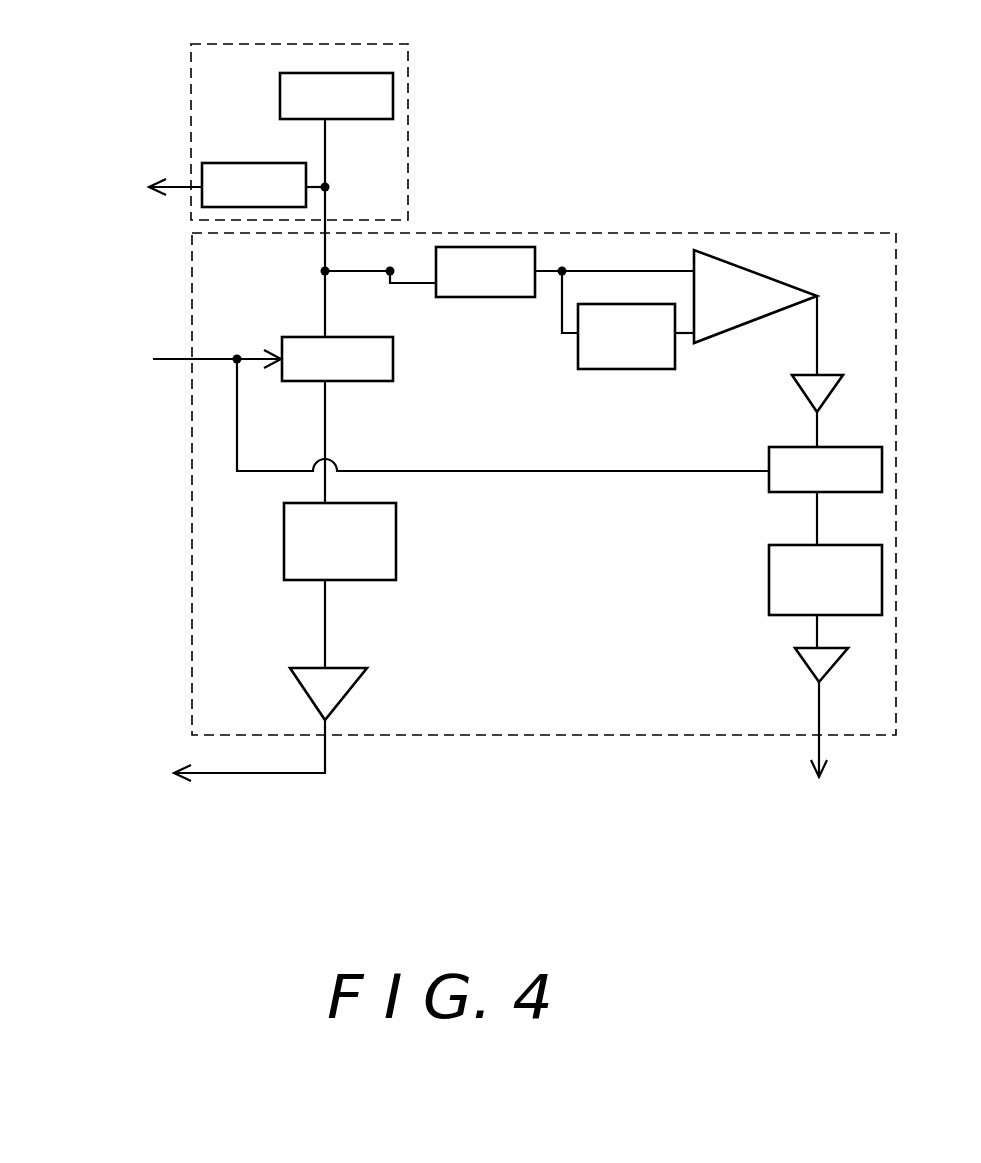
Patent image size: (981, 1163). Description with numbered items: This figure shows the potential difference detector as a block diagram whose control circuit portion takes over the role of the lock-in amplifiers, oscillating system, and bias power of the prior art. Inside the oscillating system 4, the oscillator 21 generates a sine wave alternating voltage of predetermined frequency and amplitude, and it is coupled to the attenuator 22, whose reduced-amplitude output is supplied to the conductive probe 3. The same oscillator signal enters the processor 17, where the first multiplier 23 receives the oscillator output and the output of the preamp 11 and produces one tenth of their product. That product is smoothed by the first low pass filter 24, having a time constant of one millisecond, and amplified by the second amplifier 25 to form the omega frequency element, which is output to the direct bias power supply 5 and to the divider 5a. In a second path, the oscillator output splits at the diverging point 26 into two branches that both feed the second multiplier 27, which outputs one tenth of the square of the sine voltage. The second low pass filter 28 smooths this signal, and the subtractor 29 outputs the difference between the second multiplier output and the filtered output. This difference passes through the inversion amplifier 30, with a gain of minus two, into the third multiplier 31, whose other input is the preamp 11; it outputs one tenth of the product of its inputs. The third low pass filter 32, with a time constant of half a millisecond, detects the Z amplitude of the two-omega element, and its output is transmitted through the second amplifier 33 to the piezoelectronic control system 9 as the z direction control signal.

The conductive probe 3 is at (123, 169).
The oscillating system 4 is at (383, 44).
The direct bias power supply 5 is at (286, 789).
The divider 5a is at (192, 883).
The piezoelectronic control system 9 is at (742, 771).
The preamp 11 is at (158, 354).
The processor 17 is at (705, 232).
The oscillator 21 is at (281, 93).
The attenuator 22 is at (256, 163).
The first multiplier 23 is at (395, 360).
The first low pass filter 24 is at (397, 545).
The second amplifier 25 is at (357, 668).
The diverging point 26 is at (391, 269).
The second multiplier 27 is at (478, 297).
The second low pass filter 28 is at (603, 369).
The subtractor 29 is at (770, 275).
The inversion amplifier 30 is at (790, 383).
The third multiplier 31 is at (843, 447).
The third low pass filter 32 is at (843, 545).
The second amplifier 33 is at (840, 660).